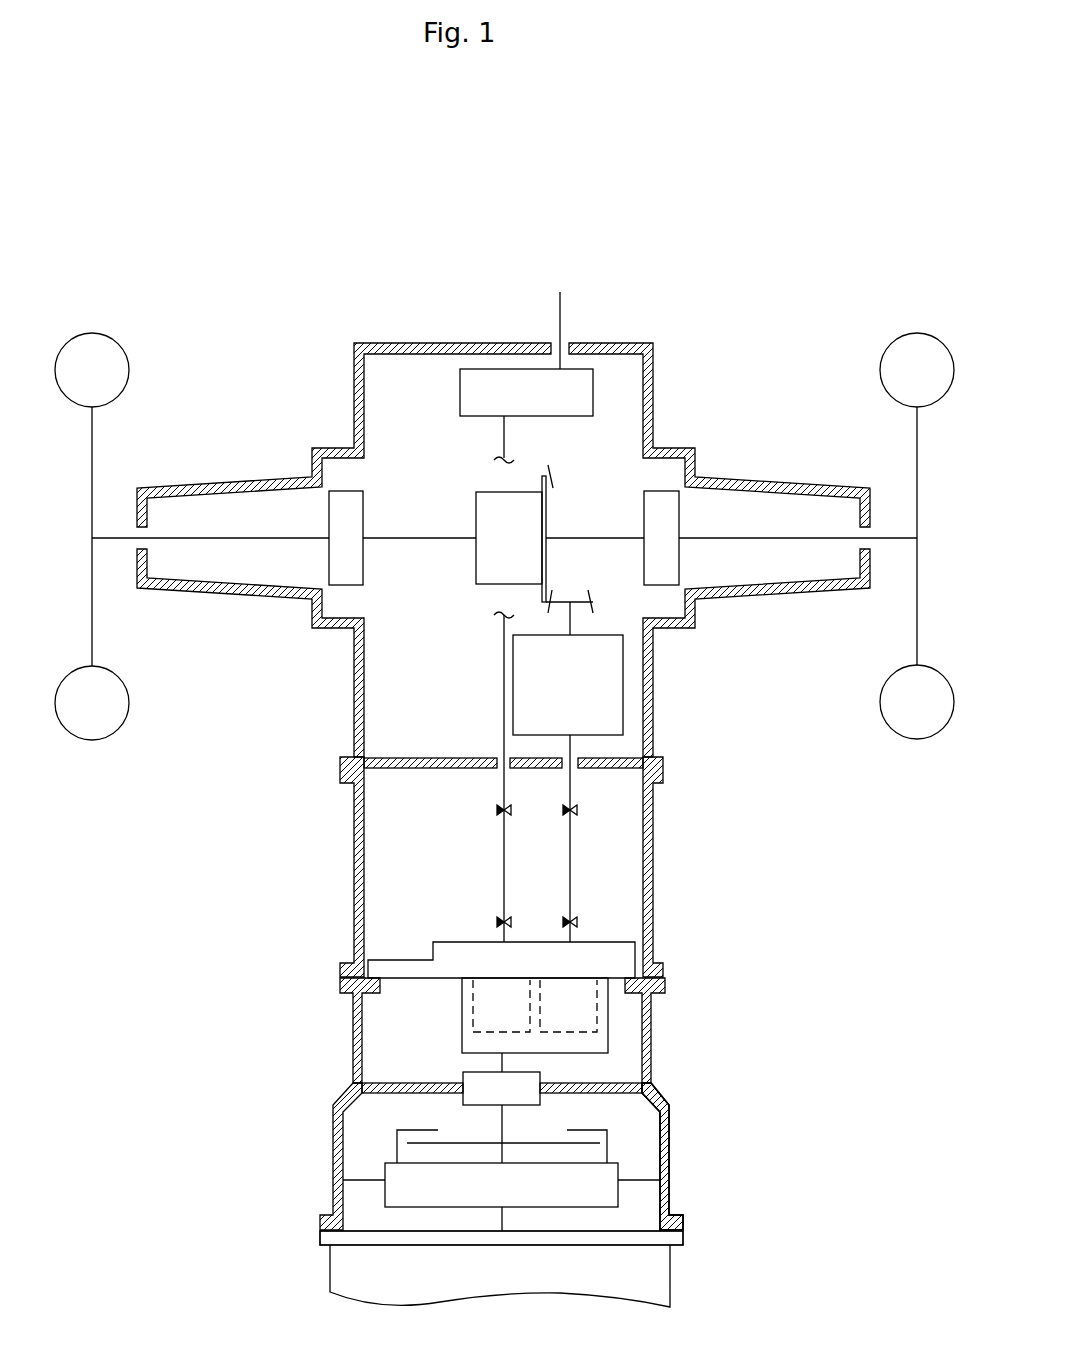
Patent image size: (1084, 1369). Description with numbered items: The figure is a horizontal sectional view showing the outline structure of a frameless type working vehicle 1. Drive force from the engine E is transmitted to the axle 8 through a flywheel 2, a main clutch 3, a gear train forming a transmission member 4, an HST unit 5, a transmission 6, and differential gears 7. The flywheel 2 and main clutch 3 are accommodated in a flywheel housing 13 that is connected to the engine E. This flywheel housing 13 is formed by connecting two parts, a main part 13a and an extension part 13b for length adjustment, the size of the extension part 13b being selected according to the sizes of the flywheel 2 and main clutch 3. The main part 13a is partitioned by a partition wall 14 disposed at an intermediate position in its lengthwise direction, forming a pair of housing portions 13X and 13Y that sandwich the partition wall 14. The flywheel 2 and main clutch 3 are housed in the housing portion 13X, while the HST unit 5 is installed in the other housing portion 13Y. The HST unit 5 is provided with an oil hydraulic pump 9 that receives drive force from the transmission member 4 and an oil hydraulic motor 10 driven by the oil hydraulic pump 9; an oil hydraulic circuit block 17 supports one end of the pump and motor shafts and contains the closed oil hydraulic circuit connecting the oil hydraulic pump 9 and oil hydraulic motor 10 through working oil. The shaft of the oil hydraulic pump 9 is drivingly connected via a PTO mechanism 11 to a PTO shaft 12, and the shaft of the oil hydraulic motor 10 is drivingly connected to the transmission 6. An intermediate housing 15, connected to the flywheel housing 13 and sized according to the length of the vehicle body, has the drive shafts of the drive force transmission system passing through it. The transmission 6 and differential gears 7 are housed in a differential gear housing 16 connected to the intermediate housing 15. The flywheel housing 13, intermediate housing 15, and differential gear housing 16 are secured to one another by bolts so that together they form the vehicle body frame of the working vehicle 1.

The working vehicle 1 is at (168, 257).
The flywheel 2 is at (388, 1188).
The main clutch 3 is at (437, 1142).
The transmission member 4 is at (470, 1065).
The HST unit 5 is at (385, 1036).
The transmission 6 is at (623, 690).
The differential gears 7 is at (570, 514).
The axle 8 is at (266, 533).
The oil hydraulic pump 9 is at (472, 1008).
The oil hydraulic motor 10 is at (595, 1018).
The PTO mechanism 11 is at (460, 392).
The PTO shaft 12 is at (560, 307).
The flywheel housing 13 is at (847, 1160).
The main part 13a is at (669, 1113).
The extension part 13b is at (672, 1213).
The housing portion 13X is at (636, 1127).
The housing portion 13Y is at (632, 1048).
The partition wall 14 is at (634, 1083).
The intermediate housing 15 is at (340, 850).
The differential gear housing 16 is at (340, 684).
The oil hydraulic circuit block 17 is at (605, 935).
The engine E is at (342, 1279).